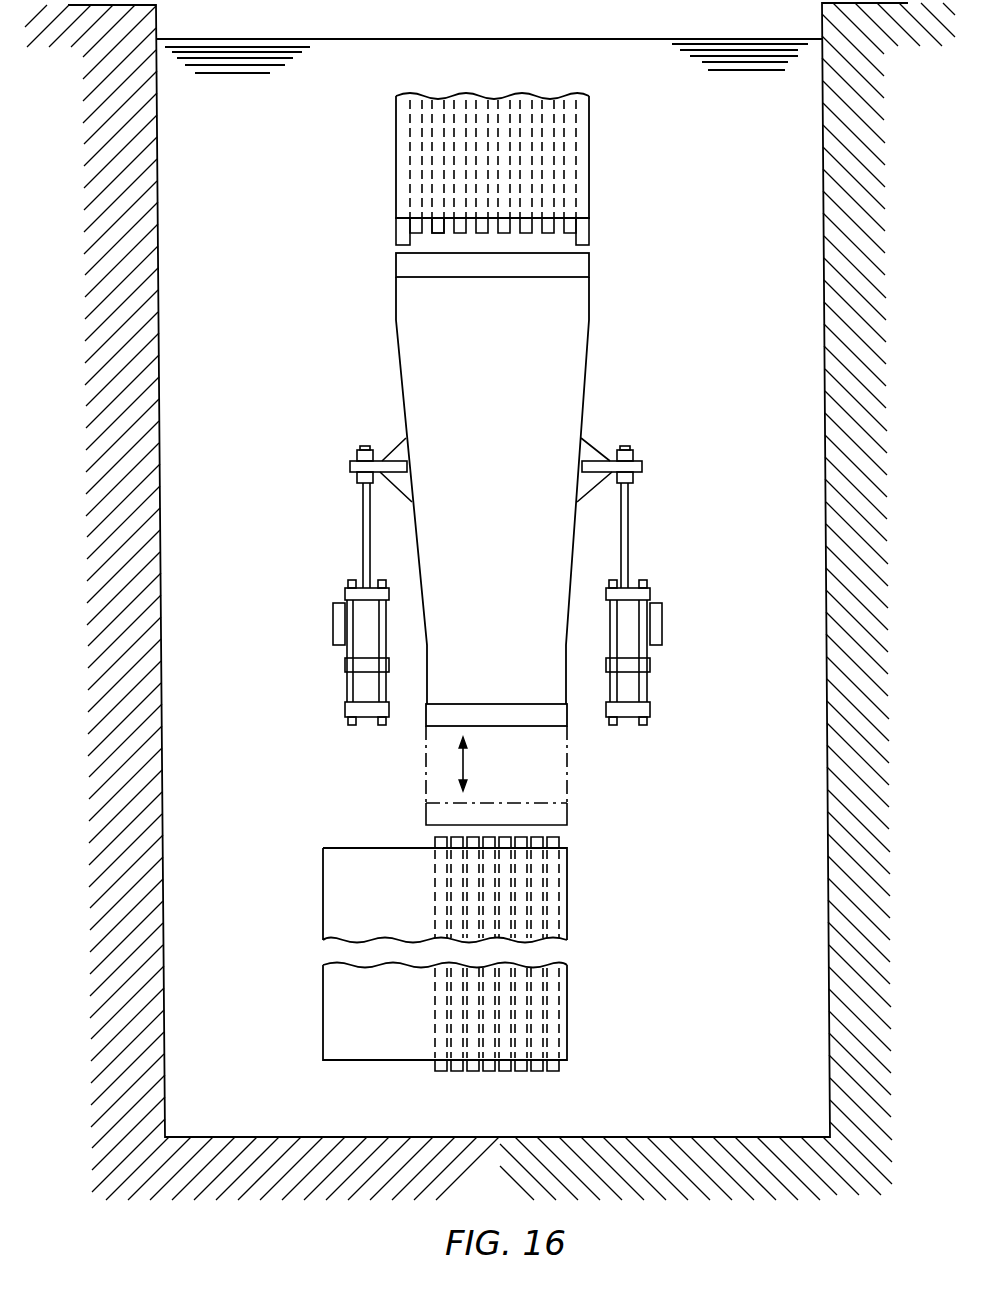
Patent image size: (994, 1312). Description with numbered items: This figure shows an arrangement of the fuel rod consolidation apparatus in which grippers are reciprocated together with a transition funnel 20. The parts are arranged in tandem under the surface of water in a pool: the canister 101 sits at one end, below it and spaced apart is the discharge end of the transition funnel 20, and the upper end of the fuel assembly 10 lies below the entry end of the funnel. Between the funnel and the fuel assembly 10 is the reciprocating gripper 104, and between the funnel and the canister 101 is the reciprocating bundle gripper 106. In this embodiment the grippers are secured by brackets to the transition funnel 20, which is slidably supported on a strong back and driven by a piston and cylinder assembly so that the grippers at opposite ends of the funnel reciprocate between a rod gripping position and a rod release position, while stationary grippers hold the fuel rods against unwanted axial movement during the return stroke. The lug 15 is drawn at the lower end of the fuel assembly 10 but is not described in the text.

The fuel assembly 10 is at (590, 186).
The rack lug / slot 15 is at (441, 234).
The gripper 104 is at (590, 262).
The transition funnel 20 is at (588, 380).
The bundle gripper 106 is at (567, 812).
The canister 101 is at (323, 907).